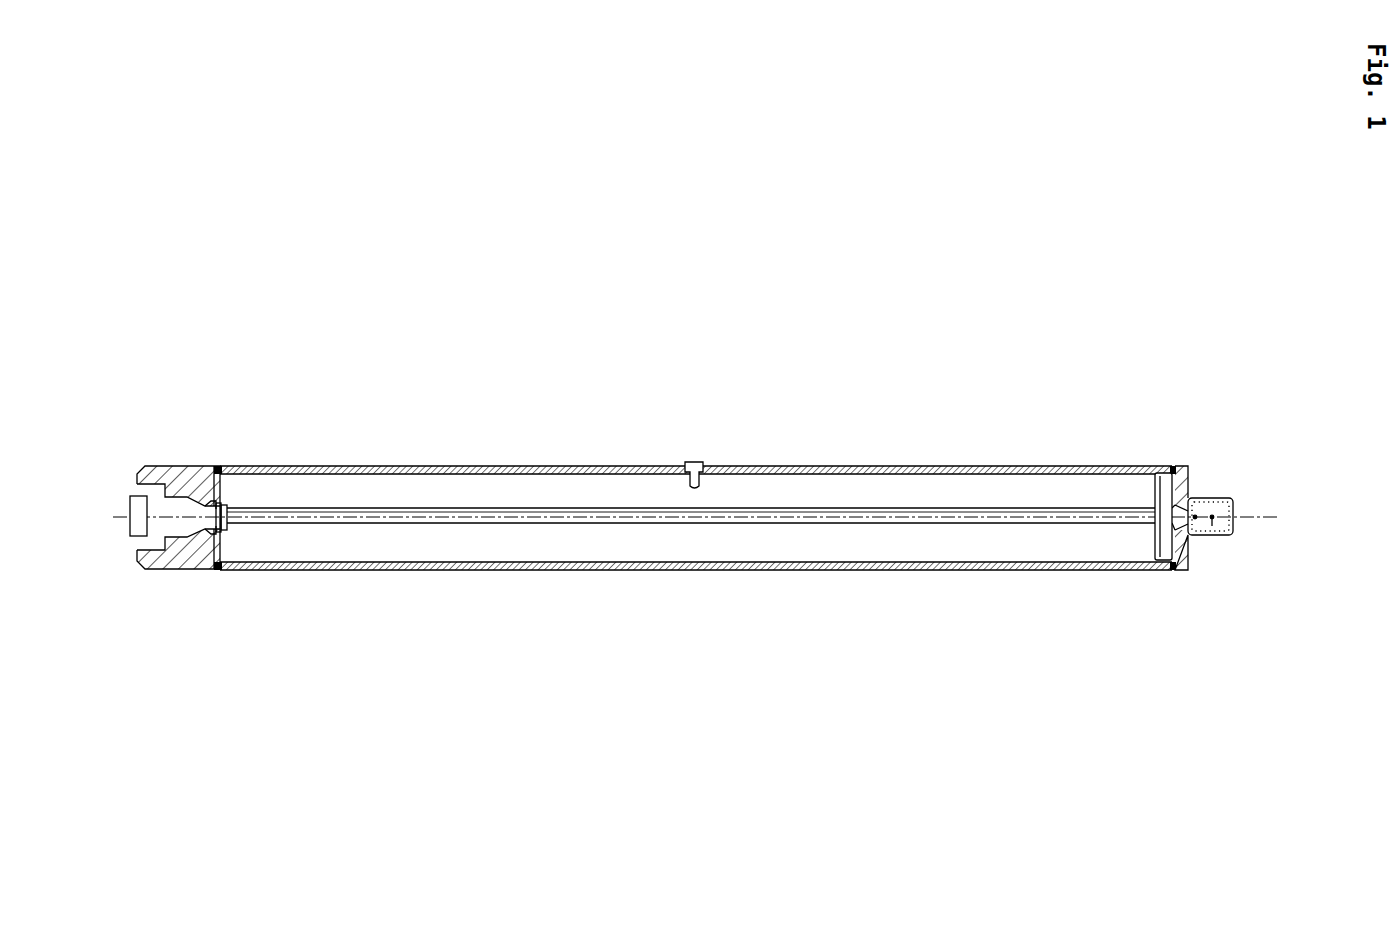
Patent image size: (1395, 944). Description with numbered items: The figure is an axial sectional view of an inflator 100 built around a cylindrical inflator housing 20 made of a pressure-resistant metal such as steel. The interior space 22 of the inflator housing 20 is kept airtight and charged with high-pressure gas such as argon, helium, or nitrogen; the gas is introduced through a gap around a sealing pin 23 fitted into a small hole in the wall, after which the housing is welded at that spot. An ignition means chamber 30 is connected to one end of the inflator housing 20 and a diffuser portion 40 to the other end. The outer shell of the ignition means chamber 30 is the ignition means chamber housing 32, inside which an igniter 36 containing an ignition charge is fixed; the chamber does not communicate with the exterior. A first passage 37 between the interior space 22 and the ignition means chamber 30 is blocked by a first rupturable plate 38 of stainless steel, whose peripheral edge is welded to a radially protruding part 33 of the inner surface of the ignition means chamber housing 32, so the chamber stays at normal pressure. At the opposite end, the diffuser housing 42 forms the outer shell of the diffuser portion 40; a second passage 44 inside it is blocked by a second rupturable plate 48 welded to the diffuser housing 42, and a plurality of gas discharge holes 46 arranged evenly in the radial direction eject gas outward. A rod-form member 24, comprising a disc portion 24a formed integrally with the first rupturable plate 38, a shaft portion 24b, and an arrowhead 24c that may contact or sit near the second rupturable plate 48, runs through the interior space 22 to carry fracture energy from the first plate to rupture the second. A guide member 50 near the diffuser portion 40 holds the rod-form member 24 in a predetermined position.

The inflator 100 is at (557, 430).
The inflator housing 20 is at (798, 465).
The interior space 22 is at (882, 487).
The sealing pin 23 is at (694, 460).
The rod-form member 24 is at (673, 528).
The disc portion 24a is at (226, 508).
The shaft portion 24b is at (525, 523).
The arrowhead 24c is at (1153, 522).
The ignition means chamber 30 is at (197, 540).
The ignition means chamber housing 32 is at (168, 472).
The radially protruding part of inner surface 33 is at (214, 472).
The igniter 36 is at (152, 523).
The first passage 37 is at (212, 530).
The first rupturable plate 38 is at (227, 530).
The diffuser portion 40 is at (1183, 462).
The diffuser housing 42 is at (1187, 483).
The second passage 44 is at (1187, 528).
The gas discharge holes 46 is at (1223, 537).
The second rupturable plate 48 is at (1172, 532).
The guide member 50 is at (1148, 495).